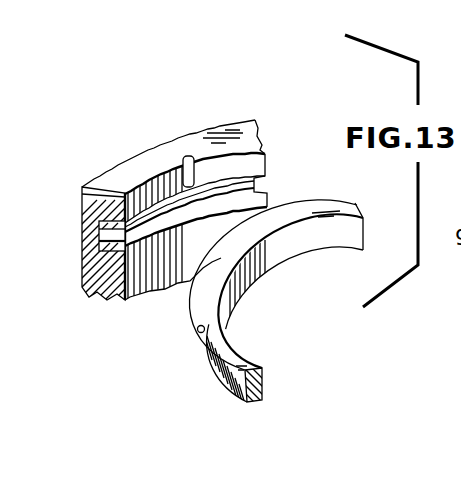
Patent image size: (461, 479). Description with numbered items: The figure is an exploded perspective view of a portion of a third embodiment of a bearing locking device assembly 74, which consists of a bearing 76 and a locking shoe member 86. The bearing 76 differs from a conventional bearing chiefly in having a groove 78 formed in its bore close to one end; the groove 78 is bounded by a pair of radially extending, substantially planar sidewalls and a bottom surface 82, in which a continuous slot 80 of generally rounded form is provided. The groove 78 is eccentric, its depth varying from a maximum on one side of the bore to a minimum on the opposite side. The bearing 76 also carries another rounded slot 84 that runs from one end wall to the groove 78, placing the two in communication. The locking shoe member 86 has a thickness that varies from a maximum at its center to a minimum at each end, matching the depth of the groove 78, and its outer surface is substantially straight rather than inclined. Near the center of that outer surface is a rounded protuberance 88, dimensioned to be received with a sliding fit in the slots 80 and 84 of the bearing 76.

The bearing locking device assembly 74 is at (222, 110).
The bearing 76 is at (82, 203).
The groove 78 is at (196, 258).
The continuous slot 80 is at (100, 240).
The bottom surface 82 is at (232, 204).
The rounded slot 84 is at (187, 157).
The locking shoe member 86 is at (238, 351).
The rounded protuberance 88 is at (198, 329).